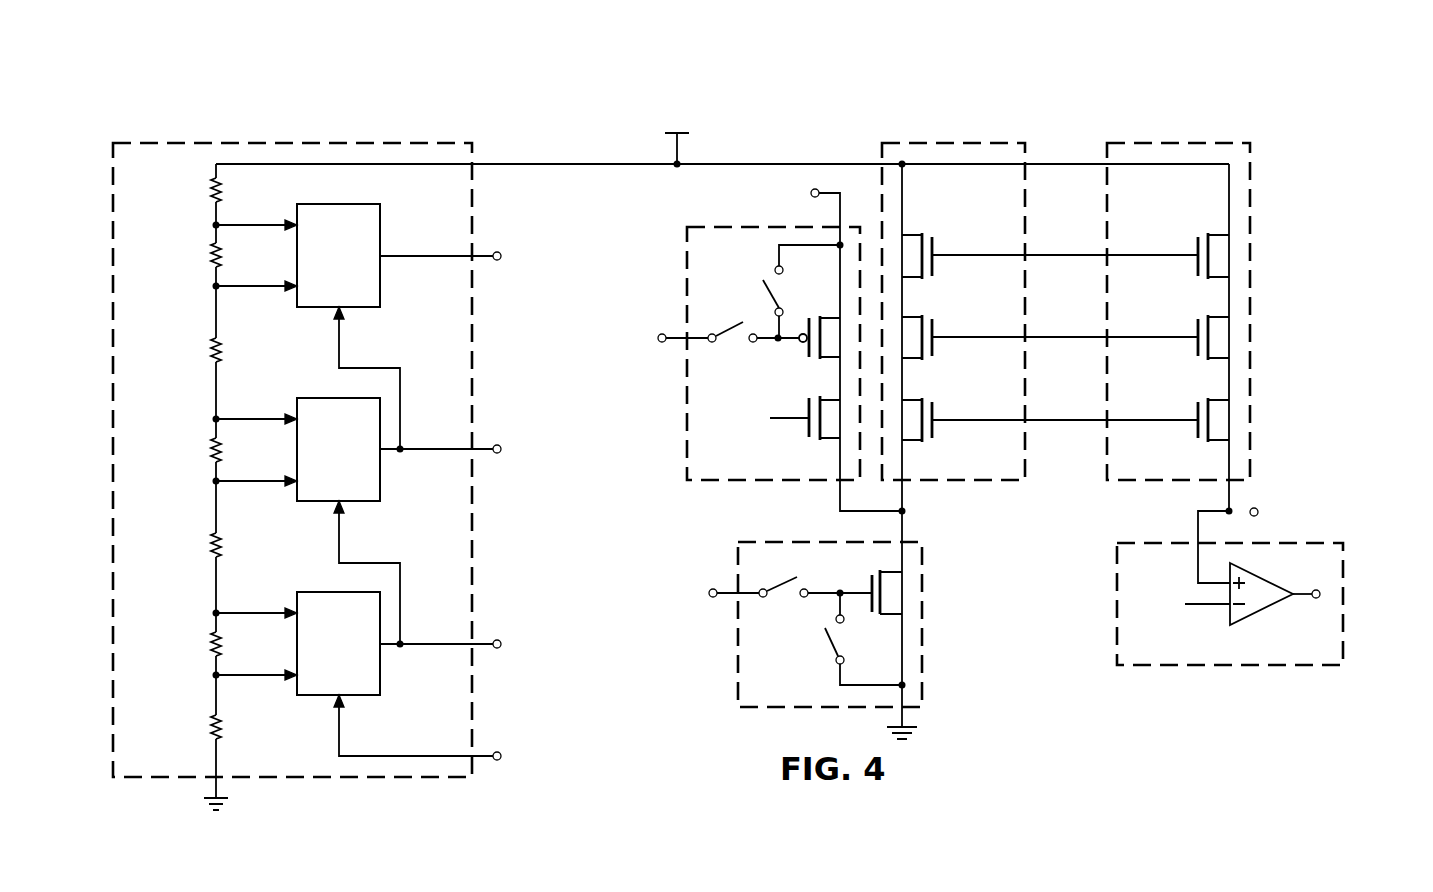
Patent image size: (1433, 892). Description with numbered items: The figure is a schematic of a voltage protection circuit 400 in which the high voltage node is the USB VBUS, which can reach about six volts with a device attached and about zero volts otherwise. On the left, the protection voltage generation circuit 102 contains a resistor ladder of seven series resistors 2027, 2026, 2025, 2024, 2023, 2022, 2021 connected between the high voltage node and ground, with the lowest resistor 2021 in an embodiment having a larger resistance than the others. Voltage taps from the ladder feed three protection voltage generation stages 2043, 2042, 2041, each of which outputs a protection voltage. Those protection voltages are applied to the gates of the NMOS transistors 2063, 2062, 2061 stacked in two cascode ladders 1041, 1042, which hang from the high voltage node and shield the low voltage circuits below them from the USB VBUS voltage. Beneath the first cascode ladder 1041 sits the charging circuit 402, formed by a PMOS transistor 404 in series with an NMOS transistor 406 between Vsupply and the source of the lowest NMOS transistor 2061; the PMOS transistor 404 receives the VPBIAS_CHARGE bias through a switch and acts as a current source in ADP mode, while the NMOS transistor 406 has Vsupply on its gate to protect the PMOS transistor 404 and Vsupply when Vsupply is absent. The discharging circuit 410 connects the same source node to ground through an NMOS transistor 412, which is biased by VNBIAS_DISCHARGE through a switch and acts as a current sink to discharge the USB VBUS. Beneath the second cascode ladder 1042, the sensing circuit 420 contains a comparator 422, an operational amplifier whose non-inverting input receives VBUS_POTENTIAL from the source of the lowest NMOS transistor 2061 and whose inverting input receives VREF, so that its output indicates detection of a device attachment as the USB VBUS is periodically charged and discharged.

The voltage protection circuit 400 is at (541, 85).
The protection voltage generation circuit 102 is at (290, 137).
The resistor 2027 is at (175, 186).
The resistor 2026 is at (175, 251).
The resistor 2025 is at (175, 346).
The resistor 2024 is at (175, 457).
The resistor 2023 is at (175, 552).
The resistor 2022 is at (175, 651).
The resistor 2021 is at (175, 734).
The protection voltage generation stage 2043 is at (337, 326).
The protection voltage generation stage 2042 is at (337, 521).
The protection voltage generation stage 2041 is at (384, 674).
The cascode ladder 1041 is at (1055, 295).
The cascode ladder 1042 is at (1178, 295).
The NMOS transistor 2063 is at (1065, 249).
The NMOS transistor 2062 is at (1065, 329).
The NMOS transistor 2061 is at (1065, 431).
The charging circuit 402 is at (682, 278).
The PMOS transistor 404 is at (807, 352).
The NMOS transistor 406 is at (807, 432).
The discharging circuit 410 is at (810, 675).
The NMOS transistor 412 is at (870, 580).
The sensing circuit 420 is at (1244, 672).
The comparator 422 is at (1260, 612).